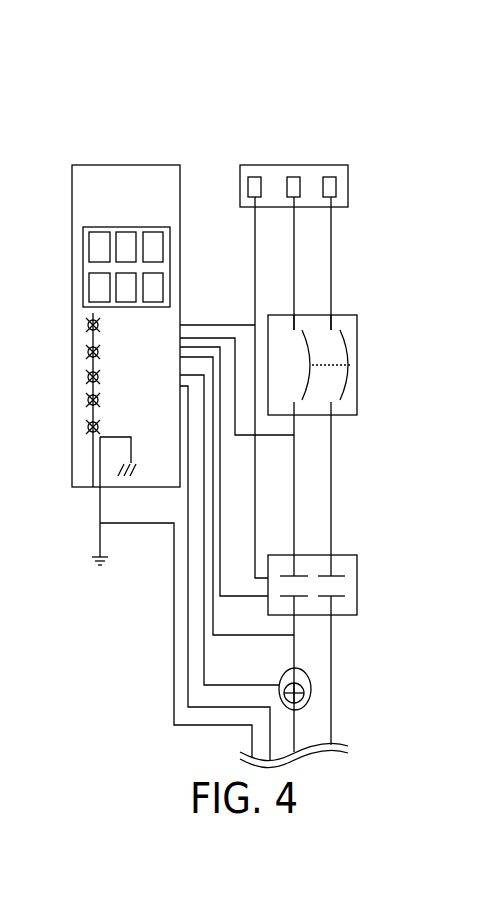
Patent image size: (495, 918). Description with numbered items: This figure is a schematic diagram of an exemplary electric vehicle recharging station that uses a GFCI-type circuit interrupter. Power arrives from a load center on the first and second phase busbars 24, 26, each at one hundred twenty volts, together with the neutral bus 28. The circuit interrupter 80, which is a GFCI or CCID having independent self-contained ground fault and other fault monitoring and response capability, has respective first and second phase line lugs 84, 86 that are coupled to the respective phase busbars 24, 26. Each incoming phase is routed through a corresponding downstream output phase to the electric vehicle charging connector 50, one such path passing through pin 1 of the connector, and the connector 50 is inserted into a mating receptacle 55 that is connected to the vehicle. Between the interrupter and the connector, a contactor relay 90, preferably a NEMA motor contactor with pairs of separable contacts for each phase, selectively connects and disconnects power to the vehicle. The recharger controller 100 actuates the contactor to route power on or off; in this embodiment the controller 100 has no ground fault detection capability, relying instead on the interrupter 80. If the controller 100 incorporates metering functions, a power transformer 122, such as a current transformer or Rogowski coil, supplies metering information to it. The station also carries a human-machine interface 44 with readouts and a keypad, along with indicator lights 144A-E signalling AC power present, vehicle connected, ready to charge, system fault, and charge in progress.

The pin 1 is at (491, 94).
The recharger controller 100 is at (63, 366).
The human-machine interface 44 is at (83, 270).
The indicator lights 144A-E is at (87, 432).
The neutral bus 28 is at (251, 176).
The first phase busbar 24 is at (287, 176).
The second phase busbar 26 is at (323, 176).
The circuit interrupter 80 is at (357, 330).
The first phase line lug 84 is at (294, 315).
The second phase line lug 86 is at (332, 305).
The contactor relay 90 is at (357, 558).
The power transformer 122 is at (312, 678).
The electric vehicle charging connector 50 is at (348, 748).
The mating receptacle 55 is at (322, 760).